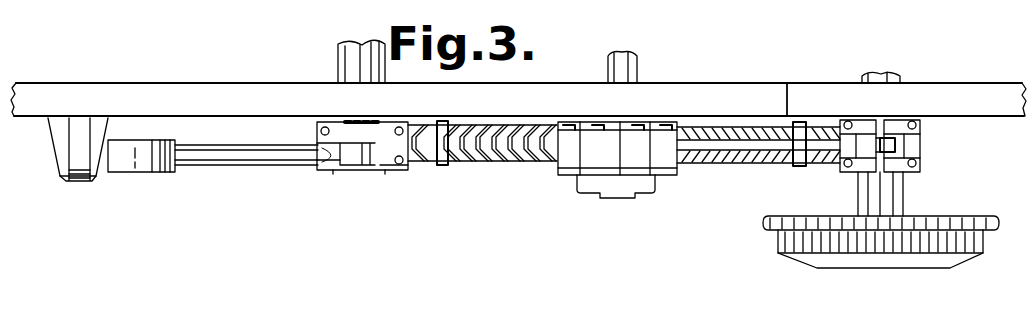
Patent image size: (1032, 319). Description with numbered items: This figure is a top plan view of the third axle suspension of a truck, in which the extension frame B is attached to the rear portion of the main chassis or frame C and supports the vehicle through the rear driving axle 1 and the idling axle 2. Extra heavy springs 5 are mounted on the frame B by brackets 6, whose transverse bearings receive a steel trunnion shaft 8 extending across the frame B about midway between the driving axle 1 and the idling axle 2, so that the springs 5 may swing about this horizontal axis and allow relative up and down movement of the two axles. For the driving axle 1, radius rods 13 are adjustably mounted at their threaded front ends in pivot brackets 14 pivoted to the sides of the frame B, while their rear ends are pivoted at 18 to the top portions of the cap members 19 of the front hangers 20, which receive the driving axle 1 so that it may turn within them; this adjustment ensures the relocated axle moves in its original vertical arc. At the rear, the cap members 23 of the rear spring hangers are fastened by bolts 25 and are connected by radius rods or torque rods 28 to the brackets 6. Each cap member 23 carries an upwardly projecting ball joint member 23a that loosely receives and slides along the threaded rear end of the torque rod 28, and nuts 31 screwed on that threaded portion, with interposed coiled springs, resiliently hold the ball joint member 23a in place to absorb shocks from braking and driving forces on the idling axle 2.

The rear driving axle 1 is at (352, 65).
The idling axle 2 is at (893, 197).
The extra heavy springs 5 is at (531, 147).
The brackets 6 is at (627, 140).
The trunnion shaft 8 is at (636, 62).
The radius rods 13 is at (268, 160).
The pivot brackets 14 is at (146, 172).
The pivot 18 is at (360, 172).
The cap members 19 is at (333, 172).
The front hangers 20 is at (385, 170).
The cap members 23 is at (925, 162).
The ball joint member 23a is at (888, 128).
The bolts 25 is at (848, 121).
The radius rods or torque rods 28 is at (755, 150).
The nuts 31 is at (821, 166).
The extension frame B is at (963, 92).
The main chassis or frame C is at (763, 92).